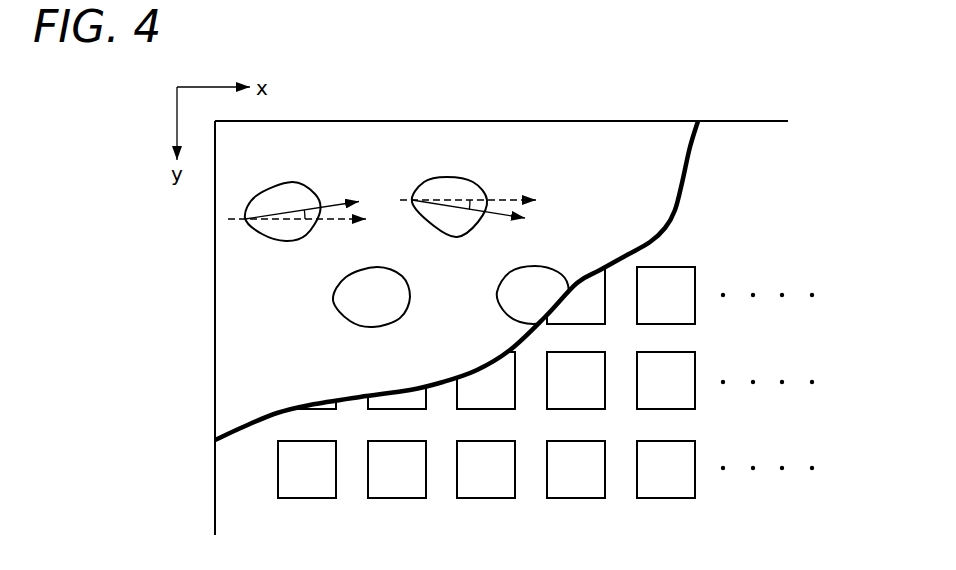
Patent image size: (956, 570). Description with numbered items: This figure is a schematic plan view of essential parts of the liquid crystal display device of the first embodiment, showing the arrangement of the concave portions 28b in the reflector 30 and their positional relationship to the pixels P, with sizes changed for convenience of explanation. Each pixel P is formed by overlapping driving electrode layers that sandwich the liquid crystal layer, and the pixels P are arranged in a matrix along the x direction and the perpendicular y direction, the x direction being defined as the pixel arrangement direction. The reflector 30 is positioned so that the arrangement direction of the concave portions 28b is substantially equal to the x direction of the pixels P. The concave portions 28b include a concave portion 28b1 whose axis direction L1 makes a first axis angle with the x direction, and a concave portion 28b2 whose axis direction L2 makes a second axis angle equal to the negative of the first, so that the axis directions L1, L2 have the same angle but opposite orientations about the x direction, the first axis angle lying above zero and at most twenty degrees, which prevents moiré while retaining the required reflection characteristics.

The reflector 30 is at (452, 126).
The concave portion having axis angle θ1 28b1 is at (320, 198).
The concave portion having axis angle θ2 28b2 is at (482, 183).
The concave portion 28b is at (338, 317).
The pixel P is at (690, 280).
The axis direction L1 is at (363, 185).
The axis direction L2 is at (532, 239).